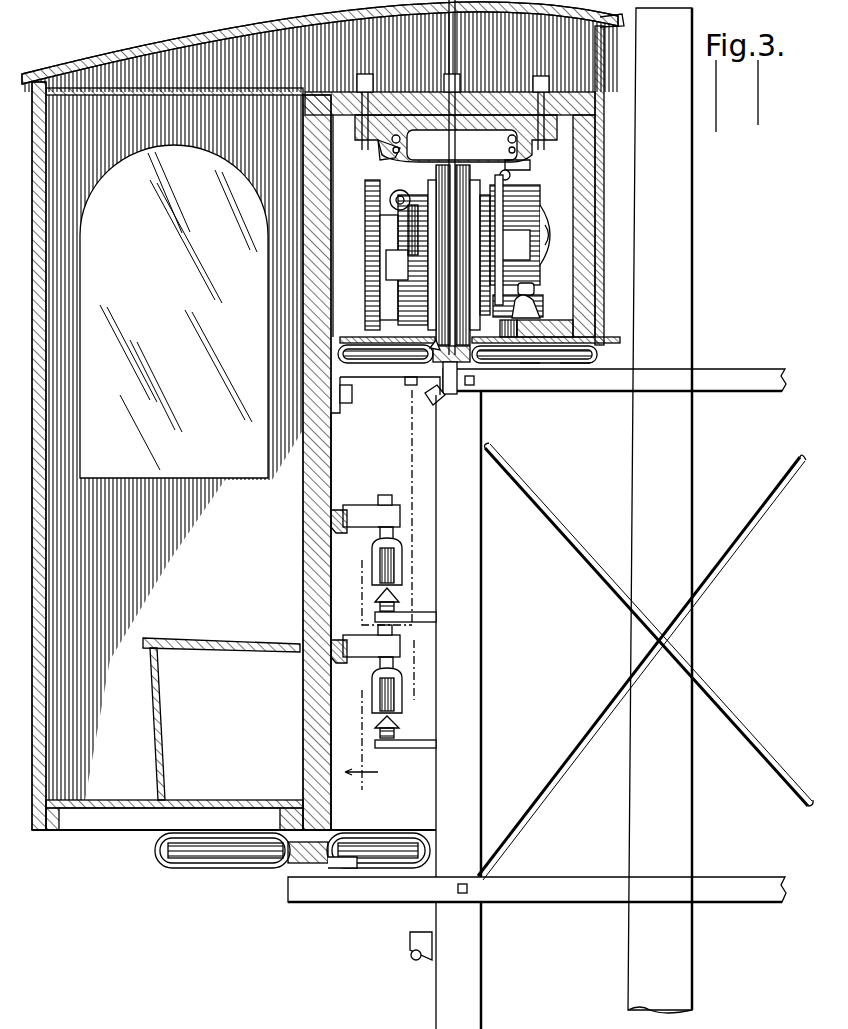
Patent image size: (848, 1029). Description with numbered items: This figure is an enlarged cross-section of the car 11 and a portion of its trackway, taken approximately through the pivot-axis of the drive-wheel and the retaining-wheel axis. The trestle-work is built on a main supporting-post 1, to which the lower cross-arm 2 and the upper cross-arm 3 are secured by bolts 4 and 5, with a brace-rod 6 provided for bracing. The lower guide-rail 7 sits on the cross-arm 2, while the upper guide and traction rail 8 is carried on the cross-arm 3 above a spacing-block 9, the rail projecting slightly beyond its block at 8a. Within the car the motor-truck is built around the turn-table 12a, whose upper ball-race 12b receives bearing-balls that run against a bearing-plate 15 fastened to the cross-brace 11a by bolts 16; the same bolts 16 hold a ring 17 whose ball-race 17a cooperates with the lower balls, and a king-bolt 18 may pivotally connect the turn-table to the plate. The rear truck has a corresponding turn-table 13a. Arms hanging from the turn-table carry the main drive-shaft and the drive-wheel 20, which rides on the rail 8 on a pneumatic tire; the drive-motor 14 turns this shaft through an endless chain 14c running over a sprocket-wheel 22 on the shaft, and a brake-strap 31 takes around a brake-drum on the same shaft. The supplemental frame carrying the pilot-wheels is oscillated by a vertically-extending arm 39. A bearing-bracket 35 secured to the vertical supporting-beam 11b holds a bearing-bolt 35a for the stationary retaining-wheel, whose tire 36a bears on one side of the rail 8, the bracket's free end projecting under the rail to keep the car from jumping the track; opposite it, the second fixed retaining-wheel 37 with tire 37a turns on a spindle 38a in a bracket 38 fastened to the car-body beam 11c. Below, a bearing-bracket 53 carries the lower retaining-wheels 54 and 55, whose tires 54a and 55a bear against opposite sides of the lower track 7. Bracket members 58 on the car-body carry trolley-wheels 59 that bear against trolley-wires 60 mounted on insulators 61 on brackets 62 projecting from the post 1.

The main supporting-post 1 is at (445, 710).
The cross-arm 2 is at (537, 889).
The cross-arm 3 is at (735, 391).
The bolt 4 is at (357, 782).
The bolt 5 is at (470, 386).
The brace-rod 6 is at (548, 522).
The lower guide-rail 7 is at (290, 862).
The upper guide and traction rail 8 is at (472, 365).
The projecting portion of traction rail 8a is at (430, 395).
The spacing-block 9 is at (455, 395).
The car 11 is at (320, 416).
The cross-brace 11a is at (518, 92).
The vertical supporting-beam 11b is at (334, 472).
The car-body beam 11c is at (604, 331).
The turn-table 12a is at (384, 154).
The ball-race 12b is at (498, 137).
The turn-table 13a is at (412, 135).
The drive-motor 14 is at (516, 246).
The endless chain 14c is at (380, 228).
The bearing-plate 15 is at (370, 100).
The bolt 16 is at (452, 206).
The ring 17 is at (518, 170).
The ball-race 17a is at (530, 160).
The king-bolt 18 is at (452, 105).
The drive-wheel 20 is at (459, 255).
The sprocket-wheel 22 is at (366, 200).
The brake-strap 31 is at (380, 259).
The bearing-bracket 35 is at (365, 390).
The bearing-bolt 35a is at (418, 380).
The pneumatic or cushion tire 36a is at (385, 365).
The second fixed retaining-wheel 37 is at (573, 363).
The tire 37a is at (590, 356).
The bracket 38 is at (535, 363).
The spindle 38a is at (530, 300).
The vertically-extending arm 39 is at (528, 212).
The bearing-bracket 53 is at (362, 833).
The lower retaining-wheel 54 is at (240, 862).
The pneumatic or cushion tire 54a is at (195, 862).
The lower retaining-wheel 55 is at (362, 854).
The pneumatic or cushion tire 55a is at (402, 862).
The bracket member 58 is at (365, 575).
The trolley-wheel 59 is at (402, 560).
The trolley-wire 60 is at (380, 590).
The insulator 61 is at (401, 668).
The bracket 62 is at (438, 616).